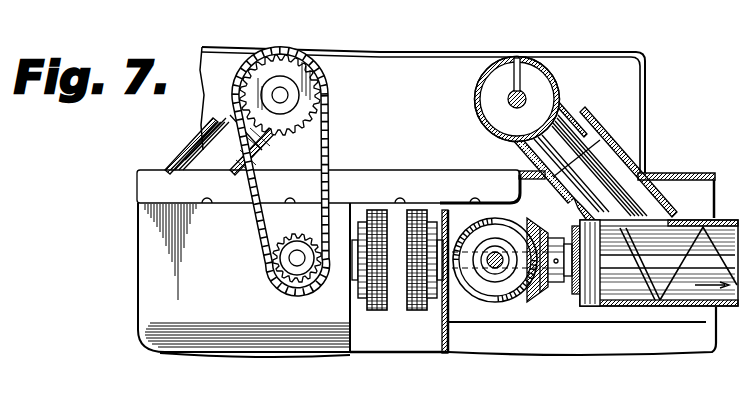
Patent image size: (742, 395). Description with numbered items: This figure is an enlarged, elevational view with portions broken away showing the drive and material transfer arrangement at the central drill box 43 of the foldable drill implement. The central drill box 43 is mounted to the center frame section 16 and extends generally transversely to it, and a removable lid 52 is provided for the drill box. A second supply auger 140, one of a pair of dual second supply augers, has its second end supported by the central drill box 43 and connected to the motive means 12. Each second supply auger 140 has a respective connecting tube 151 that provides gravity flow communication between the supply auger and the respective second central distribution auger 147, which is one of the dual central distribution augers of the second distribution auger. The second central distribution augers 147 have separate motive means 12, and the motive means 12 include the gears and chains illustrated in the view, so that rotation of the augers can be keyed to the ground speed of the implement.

The motive means 12 is at (282, 47).
The center frame section 16 is at (645, 86).
The central drill box 43 is at (135, 309).
The removable lid 52 is at (134, 192).
The second supply auger 140 is at (475, 88).
The second central distribution auger 147 is at (648, 308).
The connecting tube 151 is at (622, 164).